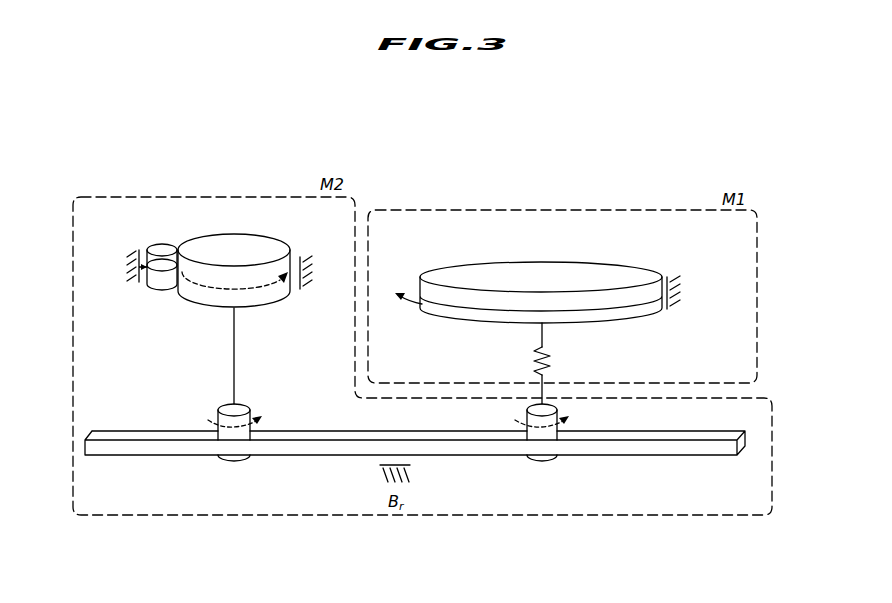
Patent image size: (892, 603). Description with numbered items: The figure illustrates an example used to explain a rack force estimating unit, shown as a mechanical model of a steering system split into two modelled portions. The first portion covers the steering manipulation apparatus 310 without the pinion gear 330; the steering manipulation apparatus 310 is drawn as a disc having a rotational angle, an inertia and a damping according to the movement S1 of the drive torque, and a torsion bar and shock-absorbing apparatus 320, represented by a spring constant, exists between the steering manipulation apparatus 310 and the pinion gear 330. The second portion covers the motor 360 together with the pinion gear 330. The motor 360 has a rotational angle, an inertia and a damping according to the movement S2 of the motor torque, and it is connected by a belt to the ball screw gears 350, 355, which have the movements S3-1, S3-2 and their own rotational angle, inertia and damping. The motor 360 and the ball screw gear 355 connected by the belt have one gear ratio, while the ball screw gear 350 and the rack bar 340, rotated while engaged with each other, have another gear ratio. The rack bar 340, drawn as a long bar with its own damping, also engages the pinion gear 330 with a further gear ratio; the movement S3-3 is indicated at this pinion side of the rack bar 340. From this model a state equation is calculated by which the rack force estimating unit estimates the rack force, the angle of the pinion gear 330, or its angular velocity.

The steering manipulation apparatus 310 is at (438, 272).
The shock-absorbing apparatus 320 is at (548, 370).
The pinion gear 330 is at (537, 460).
The rack bar 340 is at (630, 445).
The ball screw gear 350 is at (228, 460).
The ball screw gear 355 is at (208, 242).
The motor 360 is at (152, 250).
The movement of the drive torque S1 is at (457, 297).
The movement of the motor torque S2 is at (178, 268).
The movement of the ball screw gears S3-1 is at (255, 290).
The movement of the ball screw gears S3-2 is at (250, 427).
The sensor S3-3 is at (523, 430).